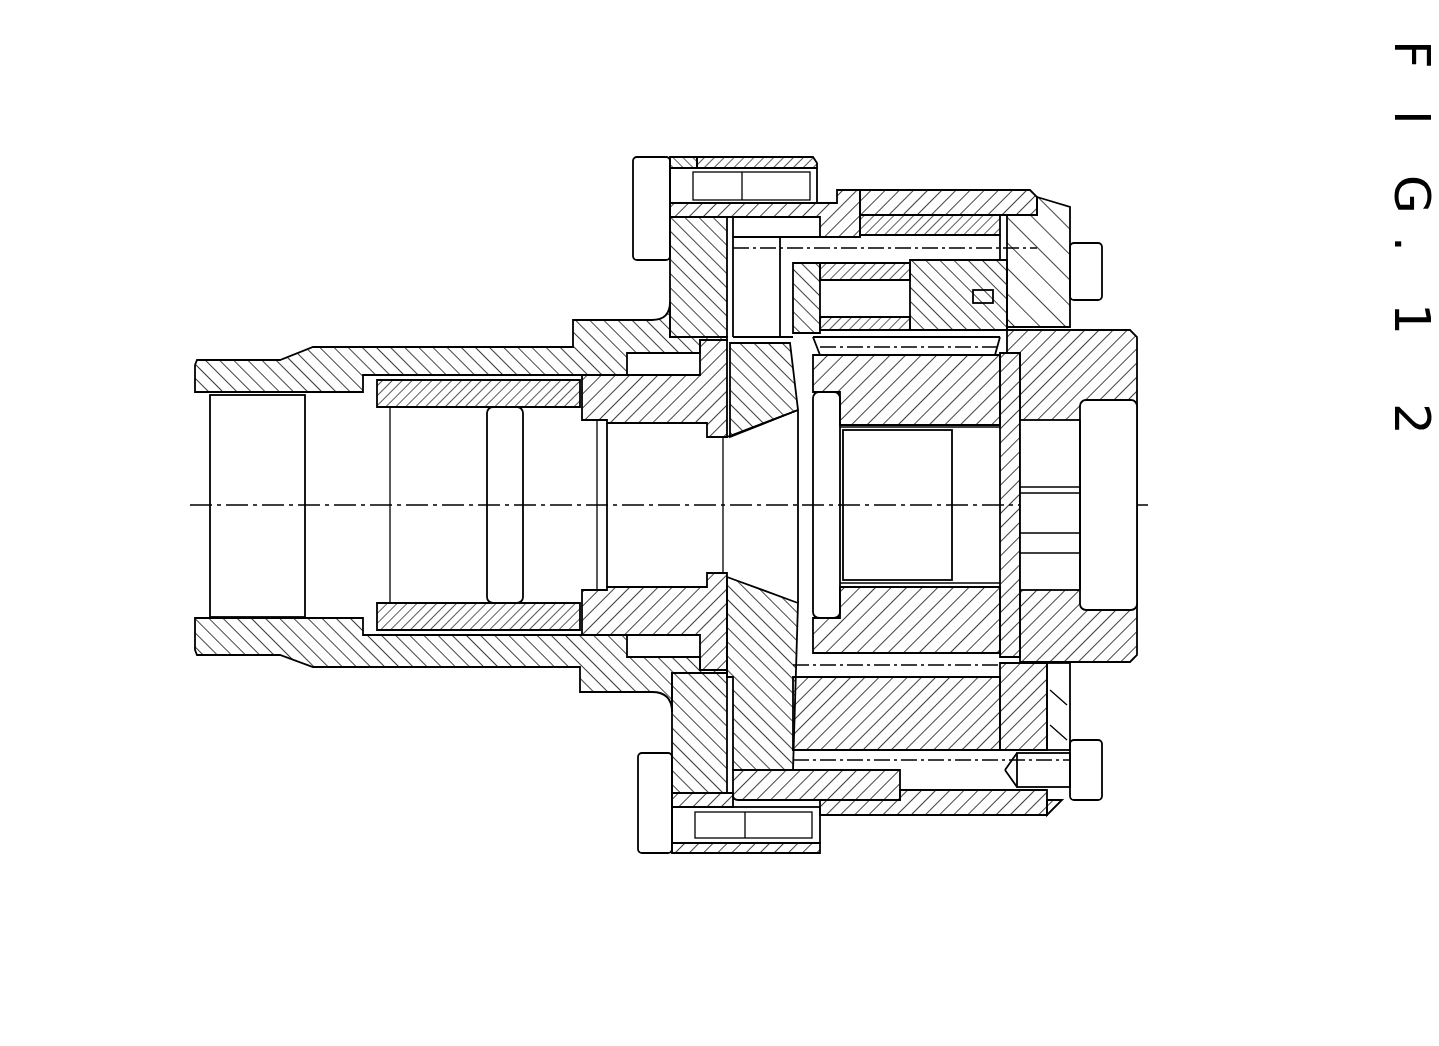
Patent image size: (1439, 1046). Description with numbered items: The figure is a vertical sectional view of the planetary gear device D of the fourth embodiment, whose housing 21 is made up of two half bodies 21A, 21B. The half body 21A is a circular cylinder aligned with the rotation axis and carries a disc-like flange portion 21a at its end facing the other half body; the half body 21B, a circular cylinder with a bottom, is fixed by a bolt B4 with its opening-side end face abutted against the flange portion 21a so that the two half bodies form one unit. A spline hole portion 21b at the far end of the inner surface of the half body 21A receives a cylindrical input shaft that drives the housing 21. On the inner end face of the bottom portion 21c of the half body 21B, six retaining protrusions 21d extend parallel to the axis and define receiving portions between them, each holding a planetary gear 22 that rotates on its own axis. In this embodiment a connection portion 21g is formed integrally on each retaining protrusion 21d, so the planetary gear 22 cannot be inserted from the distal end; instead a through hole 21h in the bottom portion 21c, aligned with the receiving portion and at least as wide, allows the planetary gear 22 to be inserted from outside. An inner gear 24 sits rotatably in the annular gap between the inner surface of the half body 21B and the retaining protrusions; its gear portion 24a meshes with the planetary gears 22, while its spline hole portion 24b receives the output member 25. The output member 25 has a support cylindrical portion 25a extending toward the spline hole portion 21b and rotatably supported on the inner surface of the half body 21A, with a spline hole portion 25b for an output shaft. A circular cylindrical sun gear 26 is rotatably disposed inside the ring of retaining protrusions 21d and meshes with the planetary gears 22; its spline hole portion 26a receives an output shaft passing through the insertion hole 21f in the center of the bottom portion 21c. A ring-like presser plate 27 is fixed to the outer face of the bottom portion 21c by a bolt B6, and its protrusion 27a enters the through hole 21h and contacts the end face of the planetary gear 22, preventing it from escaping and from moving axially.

The housing 21 is at (790, 93).
The half body 21A is at (683, 155).
The half body (carrier) 21B is at (767, 155).
The flange portion 21a is at (687, 278).
The spline hole portion 21b is at (257, 395).
The bottom portion 21c is at (1030, 708).
The retaining protrusion 21d is at (907, 717).
The insertion hole 21f is at (1103, 470).
The connection portion 21g is at (825, 192).
The through hole 21h is at (1020, 227).
The planetary gear 22 is at (918, 268).
The inner gear 24 is at (942, 213).
The gear portion 24a is at (975, 267).
The spline hole portion 24b is at (747, 268).
The output member 25 is at (752, 723).
The support cylindrical portion 25a is at (658, 610).
The spline hole portion 25b is at (432, 592).
The sun gear 26 is at (945, 617).
The spline hole portion 26a is at (878, 790).
The presser plate 27 is at (1073, 232).
The protrusion 27a is at (1013, 293).
The bolt B4 is at (650, 157).
The bolt B6 is at (1103, 297).
The planetary gear device D is at (1128, 137).